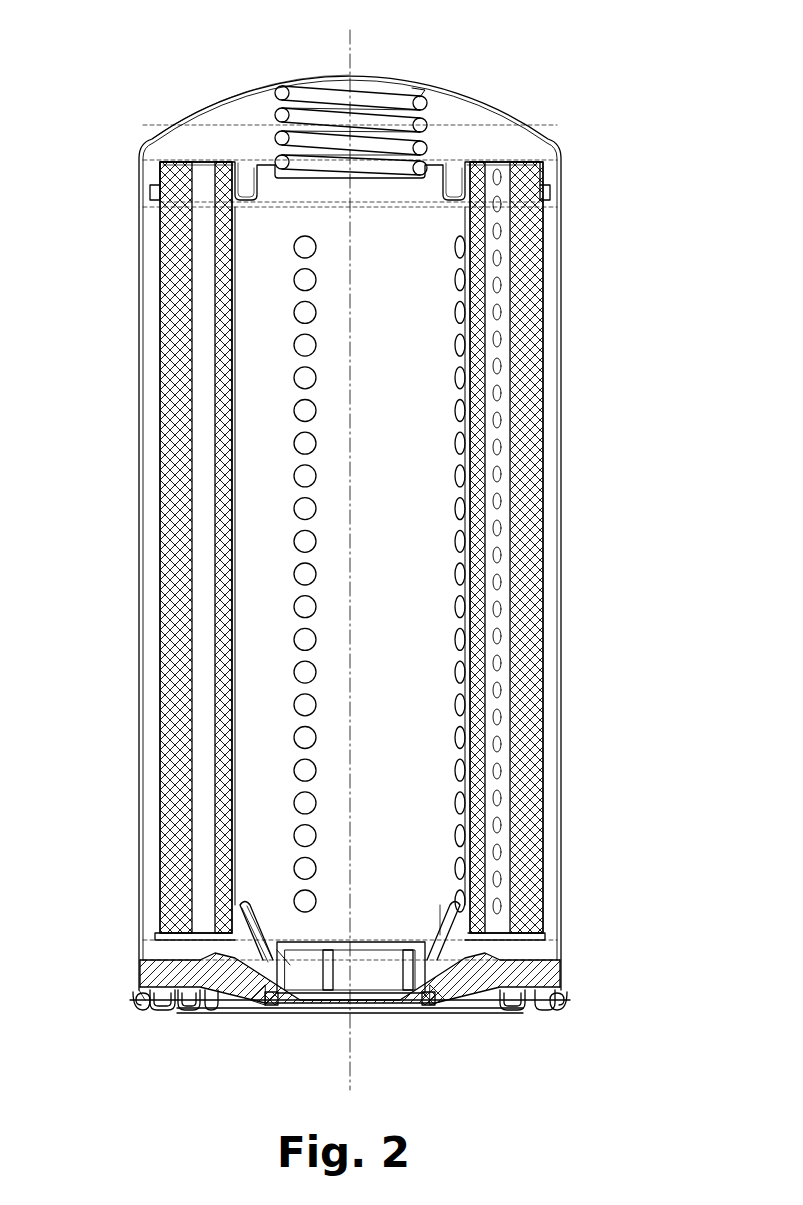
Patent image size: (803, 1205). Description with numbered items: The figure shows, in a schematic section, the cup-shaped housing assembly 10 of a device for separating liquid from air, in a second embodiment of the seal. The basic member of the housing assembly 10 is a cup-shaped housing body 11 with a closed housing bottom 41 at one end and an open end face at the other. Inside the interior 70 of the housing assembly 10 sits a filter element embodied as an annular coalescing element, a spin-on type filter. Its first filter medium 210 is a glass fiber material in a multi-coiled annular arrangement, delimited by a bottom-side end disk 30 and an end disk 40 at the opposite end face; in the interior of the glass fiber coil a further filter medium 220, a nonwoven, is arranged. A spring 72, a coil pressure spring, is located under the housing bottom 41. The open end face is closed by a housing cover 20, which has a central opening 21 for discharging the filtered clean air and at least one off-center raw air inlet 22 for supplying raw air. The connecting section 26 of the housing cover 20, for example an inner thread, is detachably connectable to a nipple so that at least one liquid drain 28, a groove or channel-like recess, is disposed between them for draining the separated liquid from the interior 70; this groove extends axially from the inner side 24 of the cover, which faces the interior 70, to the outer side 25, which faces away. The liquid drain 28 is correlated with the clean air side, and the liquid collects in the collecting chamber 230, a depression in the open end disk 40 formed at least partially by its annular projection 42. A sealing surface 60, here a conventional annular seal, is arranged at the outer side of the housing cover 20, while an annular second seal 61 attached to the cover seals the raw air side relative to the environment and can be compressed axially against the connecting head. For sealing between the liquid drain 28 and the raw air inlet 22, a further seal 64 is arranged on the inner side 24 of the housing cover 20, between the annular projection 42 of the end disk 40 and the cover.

The cup-shaped housing assembly 10 is at (622, 250).
The cup-shaped housing body 11 is at (562, 400).
The housing cover 20 is at (562, 975).
The opening 21 is at (351, 967).
The raw air inlet 22 is at (230, 1000).
The inner side of the housing cover 24 is at (548, 965).
The outer side of the housing cover 25 is at (142, 985).
The connecting section 26 is at (290, 965).
The liquid drain 28 is at (332, 960).
The bottom-side end disk 30 is at (472, 160).
The end disk 40 is at (545, 905).
The housing bottom 41 is at (442, 88).
The annular projection 42 is at (262, 940).
The sealing surface 60 is at (430, 1005).
The outer sealing surface 61 is at (190, 1005).
The seal 64 is at (310, 1000).
The interior 70 is at (250, 105).
The spring 72 is at (400, 98).
The first filter medium 210 is at (540, 478).
The further filter medium 220 is at (350, 559).
The liquid collecting chamber 230 is at (440, 930).